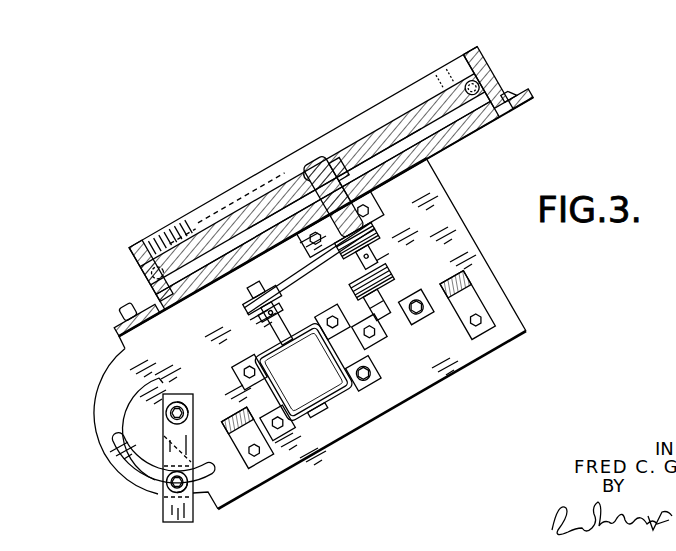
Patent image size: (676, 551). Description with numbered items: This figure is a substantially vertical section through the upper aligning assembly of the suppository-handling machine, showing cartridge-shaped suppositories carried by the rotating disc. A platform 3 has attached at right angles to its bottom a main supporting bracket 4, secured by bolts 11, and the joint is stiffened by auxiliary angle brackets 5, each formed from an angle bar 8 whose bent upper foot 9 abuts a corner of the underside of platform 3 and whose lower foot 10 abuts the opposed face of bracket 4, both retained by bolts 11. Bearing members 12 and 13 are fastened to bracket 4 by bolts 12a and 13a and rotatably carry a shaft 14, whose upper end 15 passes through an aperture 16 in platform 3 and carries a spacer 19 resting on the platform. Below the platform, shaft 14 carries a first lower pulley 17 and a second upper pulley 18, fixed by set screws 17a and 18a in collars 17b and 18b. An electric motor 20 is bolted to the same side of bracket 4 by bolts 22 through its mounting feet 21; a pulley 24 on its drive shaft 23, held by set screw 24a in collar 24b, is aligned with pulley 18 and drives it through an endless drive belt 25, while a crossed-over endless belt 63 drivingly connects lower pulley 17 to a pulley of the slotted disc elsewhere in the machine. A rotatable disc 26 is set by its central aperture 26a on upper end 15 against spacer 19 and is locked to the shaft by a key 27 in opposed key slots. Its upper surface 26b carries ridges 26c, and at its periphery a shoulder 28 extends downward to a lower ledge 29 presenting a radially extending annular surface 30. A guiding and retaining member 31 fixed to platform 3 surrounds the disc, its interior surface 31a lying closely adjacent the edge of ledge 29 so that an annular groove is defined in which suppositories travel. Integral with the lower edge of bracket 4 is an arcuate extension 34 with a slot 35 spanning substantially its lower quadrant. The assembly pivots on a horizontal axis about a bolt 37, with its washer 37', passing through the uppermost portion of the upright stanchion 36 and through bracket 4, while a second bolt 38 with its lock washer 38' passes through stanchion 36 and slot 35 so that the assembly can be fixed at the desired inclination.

The platform 3 is at (528, 97).
The main supporting bracket 4 is at (450, 208).
The auxiliary angle brackets 5 is at (150, 279).
The angle bar 8 is at (486, 290).
The foot 9 is at (154, 268).
The foot 10 is at (489, 315).
The bolts 11 is at (130, 313).
The bearing member 12 is at (368, 195).
The bolts 12a is at (370, 210).
The bearing member 13 is at (421, 311).
The bolts 13a is at (415, 316).
The shaft 14 is at (381, 325).
The upper end 15 is at (306, 188).
The aperture 16 is at (310, 178).
The first lower pulley 17 is at (395, 281).
The set screw 17a is at (370, 300).
The collar 17b is at (333, 328).
The second upper pulley 18 is at (372, 240).
The set screw 18a is at (368, 262).
The collar 18b is at (358, 272).
The spacer 19 is at (358, 182).
The electric motor 20 is at (281, 391).
The mounting feet 21 is at (360, 374).
The bolts 22 is at (369, 374).
The drive shaft 23 is at (277, 337).
The pulley 24 is at (252, 300).
The set screw 24a is at (277, 312).
The collar 24b is at (263, 318).
The endless drive belt 25 is at (312, 283).
The rotatable disc 26 is at (375, 145).
The central aperture 26a is at (308, 186).
The upper surface 26b is at (238, 217).
The ridges 26c is at (195, 238).
The key 27 is at (327, 163).
The shoulder 28 is at (473, 67).
The lower ledge 29 is at (487, 108).
The annular surface 30 is at (481, 89).
The guiding and retaining member 31 is at (482, 82).
The interior surface 31a is at (462, 55).
The arcuate extension 34 is at (104, 378).
The slot 35 is at (121, 460).
The upright stanchion 36 is at (176, 520).
The bolt 37 is at (172, 397).
The pivot bolt washer 37' is at (198, 391).
The clamp bolt 38 is at (154, 494).
The clamp bolt washer 38' is at (202, 507).
The crossed-over endless belt 63 is at (390, 278).